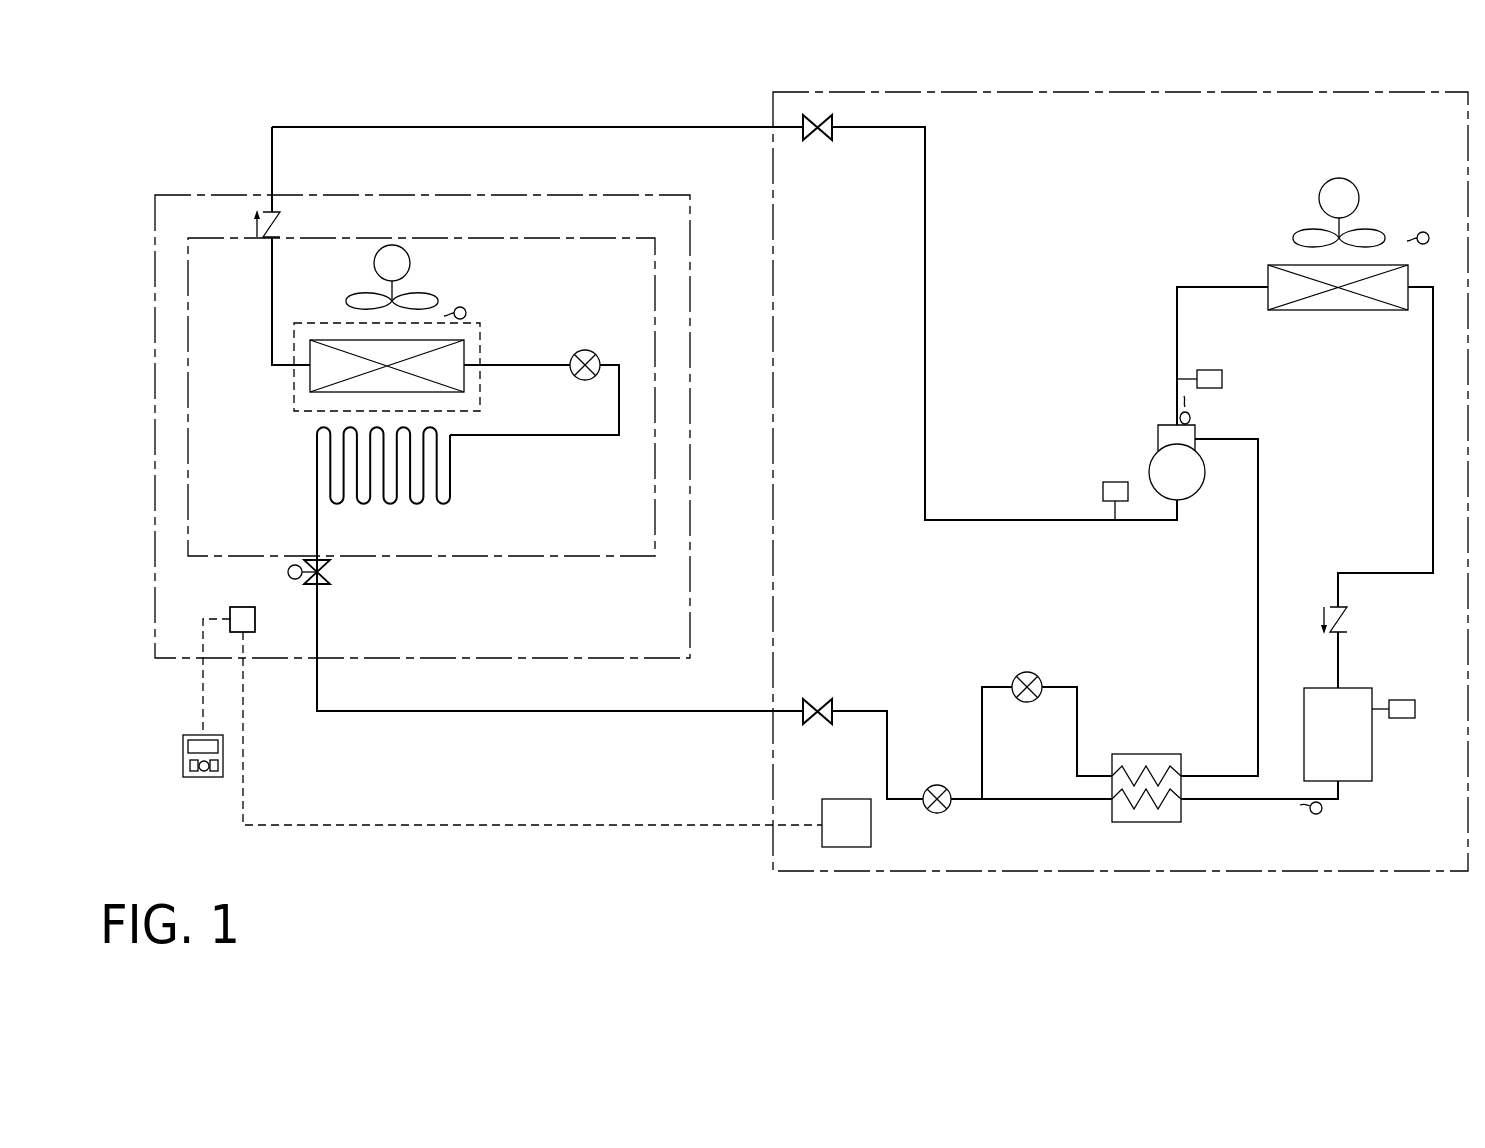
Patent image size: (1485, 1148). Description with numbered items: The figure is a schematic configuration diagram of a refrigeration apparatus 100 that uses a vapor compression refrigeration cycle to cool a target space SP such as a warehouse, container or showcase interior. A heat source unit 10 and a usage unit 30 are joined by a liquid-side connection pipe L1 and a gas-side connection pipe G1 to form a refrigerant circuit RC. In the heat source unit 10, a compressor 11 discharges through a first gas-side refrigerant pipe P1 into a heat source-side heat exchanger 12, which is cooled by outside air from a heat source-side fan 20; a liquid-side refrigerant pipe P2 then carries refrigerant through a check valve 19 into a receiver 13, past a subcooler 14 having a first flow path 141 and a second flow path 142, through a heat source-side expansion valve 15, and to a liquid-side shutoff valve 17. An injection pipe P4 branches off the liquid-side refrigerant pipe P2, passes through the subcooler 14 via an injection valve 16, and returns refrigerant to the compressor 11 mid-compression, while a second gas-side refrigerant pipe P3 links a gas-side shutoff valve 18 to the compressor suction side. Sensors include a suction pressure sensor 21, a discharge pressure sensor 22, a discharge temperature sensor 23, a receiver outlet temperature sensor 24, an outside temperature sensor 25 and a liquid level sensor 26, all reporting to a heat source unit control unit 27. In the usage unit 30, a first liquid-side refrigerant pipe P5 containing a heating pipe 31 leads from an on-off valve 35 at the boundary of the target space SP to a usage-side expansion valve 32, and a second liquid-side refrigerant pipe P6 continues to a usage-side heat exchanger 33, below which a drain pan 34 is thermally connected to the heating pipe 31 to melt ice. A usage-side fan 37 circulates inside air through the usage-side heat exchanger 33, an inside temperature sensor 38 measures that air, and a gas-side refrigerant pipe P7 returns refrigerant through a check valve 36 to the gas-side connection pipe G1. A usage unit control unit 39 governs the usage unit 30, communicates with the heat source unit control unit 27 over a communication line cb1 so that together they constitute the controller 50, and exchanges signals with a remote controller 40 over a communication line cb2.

The refrigeration apparatus 100 is at (193, 108).
The heat source unit 10 is at (772, 868).
The compressor 11 is at (1158, 438).
The heat source-side heat exchanger 12 is at (1338, 310).
The receiver 13 is at (1326, 688).
The subcooler 14 is at (1166, 779).
The first flow path 141 is at (1168, 818).
The second flow path 142 is at (1170, 770).
The heat source-side expansion valve 15 is at (936, 785).
The injection valve 16 is at (1027, 672).
The liquid-side shutoff valve 17 is at (817, 698).
The gas-side shutoff valve 18 is at (820, 140).
The check valve 19 is at (1348, 607).
The heat source-side fan 20 is at (1292, 238).
The suction pressure sensor 21 is at (1103, 492).
The discharge pressure sensor 22 is at (1222, 379).
The discharge temperature sensor 23 is at (1190, 411).
The receiver outlet temperature sensor 24 is at (1314, 814).
The outside temperature sensor 25 is at (1421, 232).
The liquid level sensor 26 is at (1405, 700).
The heat source unit control unit 27 is at (871, 824).
The usage unit 30 is at (187, 195).
The heating pipe 31 is at (418, 505).
The usage-side expansion valve 32 is at (586, 350).
The usage-side heat exchanger 33 is at (464, 345).
The drain pan 34 is at (294, 397).
The on-off valve 35 is at (332, 572).
The check valve 36 is at (282, 222).
The usage-side fan 37 is at (347, 300).
The inside temperature sensor 38 is at (458, 307).
The usage unit control unit 39 is at (242, 607).
The remote controller 40 is at (185, 746).
The controller 50 is at (242, 619).
The refrigerant circuit RC is at (485, 110).
The gas-side connection pipe G1 is at (600, 127).
The liquid-side connection pipe L1 is at (605, 713).
The first gas-side refrigerant pipe P1 is at (1168, 345).
The liquid-side refrigerant pipe P2 is at (1424, 480).
The second gas-side refrigerant pipe P3 is at (940, 285).
The injection pipe P4 is at (1080, 679).
The first liquid-side refrigerant pipe P5 is at (306, 528).
The second liquid-side refrigerant pipe P6 is at (542, 352).
The gas-side refrigerant pipe P7 is at (262, 260).
The target space SP is at (541, 528).
The communication line cb1 is at (468, 830).
The communication line cb2 is at (203, 686).